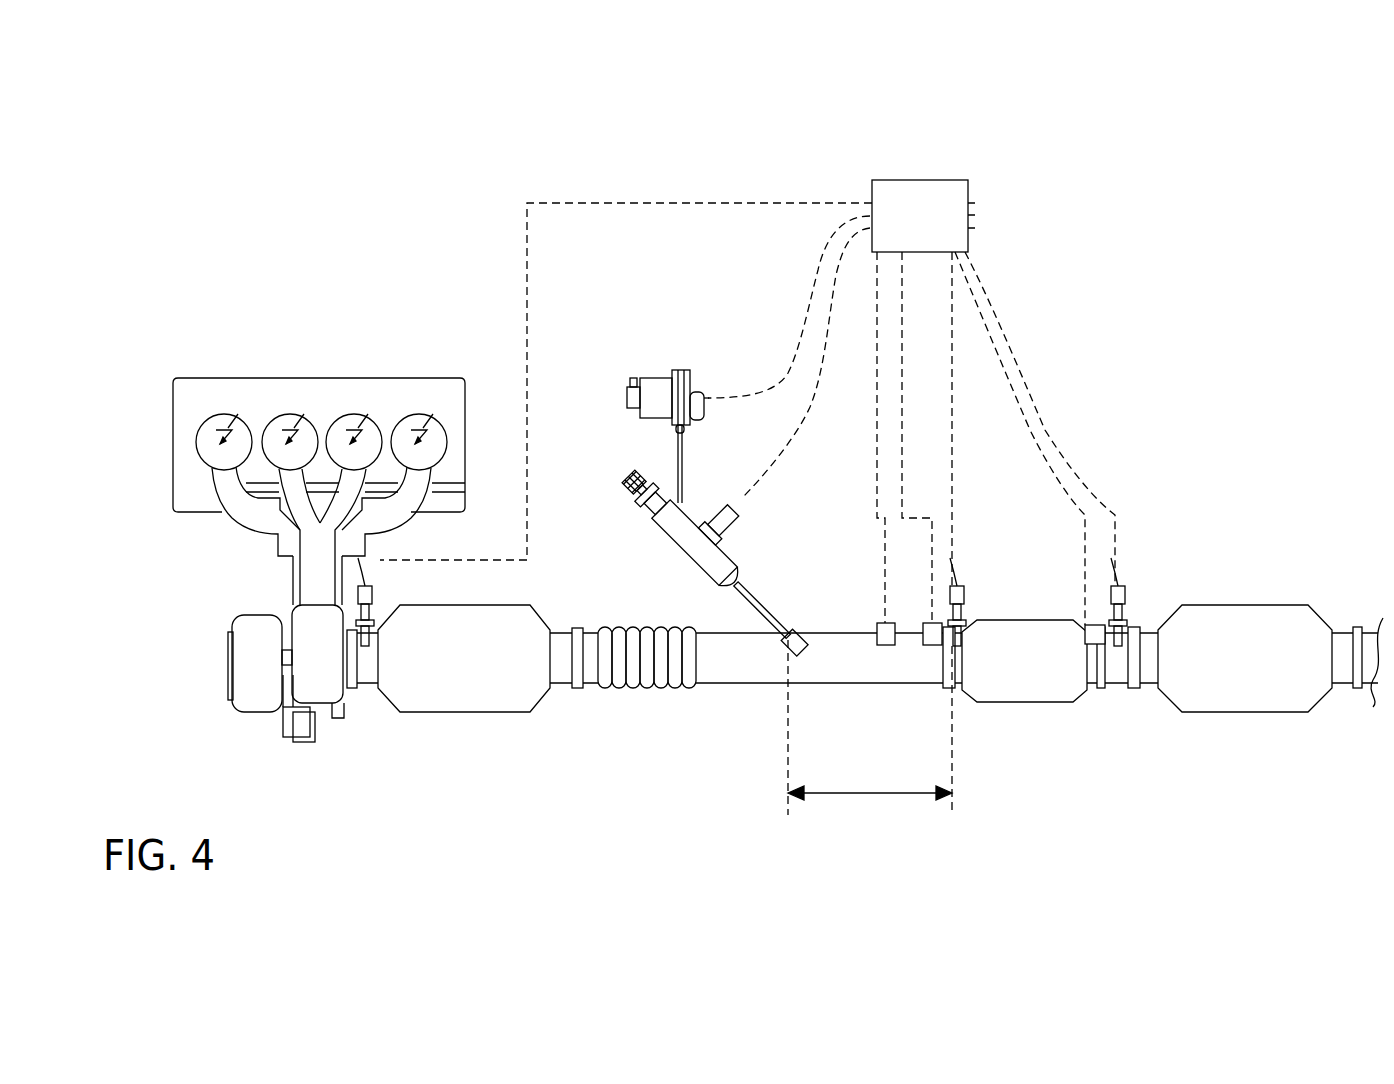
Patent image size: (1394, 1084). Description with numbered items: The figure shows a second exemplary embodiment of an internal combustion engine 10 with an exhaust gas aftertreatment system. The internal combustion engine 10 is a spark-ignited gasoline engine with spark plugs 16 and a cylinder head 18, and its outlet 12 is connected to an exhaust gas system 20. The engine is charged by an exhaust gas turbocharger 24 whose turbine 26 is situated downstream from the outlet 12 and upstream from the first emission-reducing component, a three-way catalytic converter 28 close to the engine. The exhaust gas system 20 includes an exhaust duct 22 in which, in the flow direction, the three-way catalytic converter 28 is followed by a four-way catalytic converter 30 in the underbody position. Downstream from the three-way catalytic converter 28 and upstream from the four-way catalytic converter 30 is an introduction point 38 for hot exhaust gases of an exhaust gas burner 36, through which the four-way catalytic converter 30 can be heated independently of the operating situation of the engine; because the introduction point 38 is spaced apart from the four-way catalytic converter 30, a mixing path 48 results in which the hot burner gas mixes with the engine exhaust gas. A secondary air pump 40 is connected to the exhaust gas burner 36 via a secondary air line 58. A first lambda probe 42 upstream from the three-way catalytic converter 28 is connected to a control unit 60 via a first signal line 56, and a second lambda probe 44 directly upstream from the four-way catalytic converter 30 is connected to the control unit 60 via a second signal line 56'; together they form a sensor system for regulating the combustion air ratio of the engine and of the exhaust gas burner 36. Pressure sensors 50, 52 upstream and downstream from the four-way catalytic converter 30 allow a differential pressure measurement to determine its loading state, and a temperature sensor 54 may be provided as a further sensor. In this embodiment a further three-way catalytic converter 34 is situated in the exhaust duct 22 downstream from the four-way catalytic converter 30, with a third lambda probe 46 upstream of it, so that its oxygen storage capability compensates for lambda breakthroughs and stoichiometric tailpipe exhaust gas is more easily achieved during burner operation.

The internal combustion engine 10 is at (184, 379).
The outlet 12 is at (318, 537).
The spark plug 16 is at (207, 431).
The cylinder head 18 is at (425, 507).
The exhaust gas system 20 is at (1166, 480).
The exhaust duct 22 is at (733, 673).
The exhaust gas turbocharger 24 is at (272, 740).
The turbine 26 is at (325, 713).
The three-way catalytic converter close to the engine 28 is at (460, 712).
The four-way catalytic converter 30 is at (1000, 690).
The second three-way catalytic converter 34 is at (1243, 712).
The exhaust gas burner 36 is at (724, 548).
The introduction point 38 is at (795, 633).
The secondary air pump 40 is at (665, 380).
The first lambda probe 42 is at (372, 606).
The second lambda probe 44 is at (960, 602).
The third lambda probe 46 is at (1122, 605).
The mixing path 48 is at (870, 780).
The first pressure sensor 50 is at (925, 627).
The second pressure sensor 52 is at (1086, 627).
The temperature sensor 54 is at (877, 627).
The signal line 56 is at (626, 381).
The second signal line 56' is at (996, 533).
The air line 58 is at (681, 473).
The control unit 60 is at (960, 185).